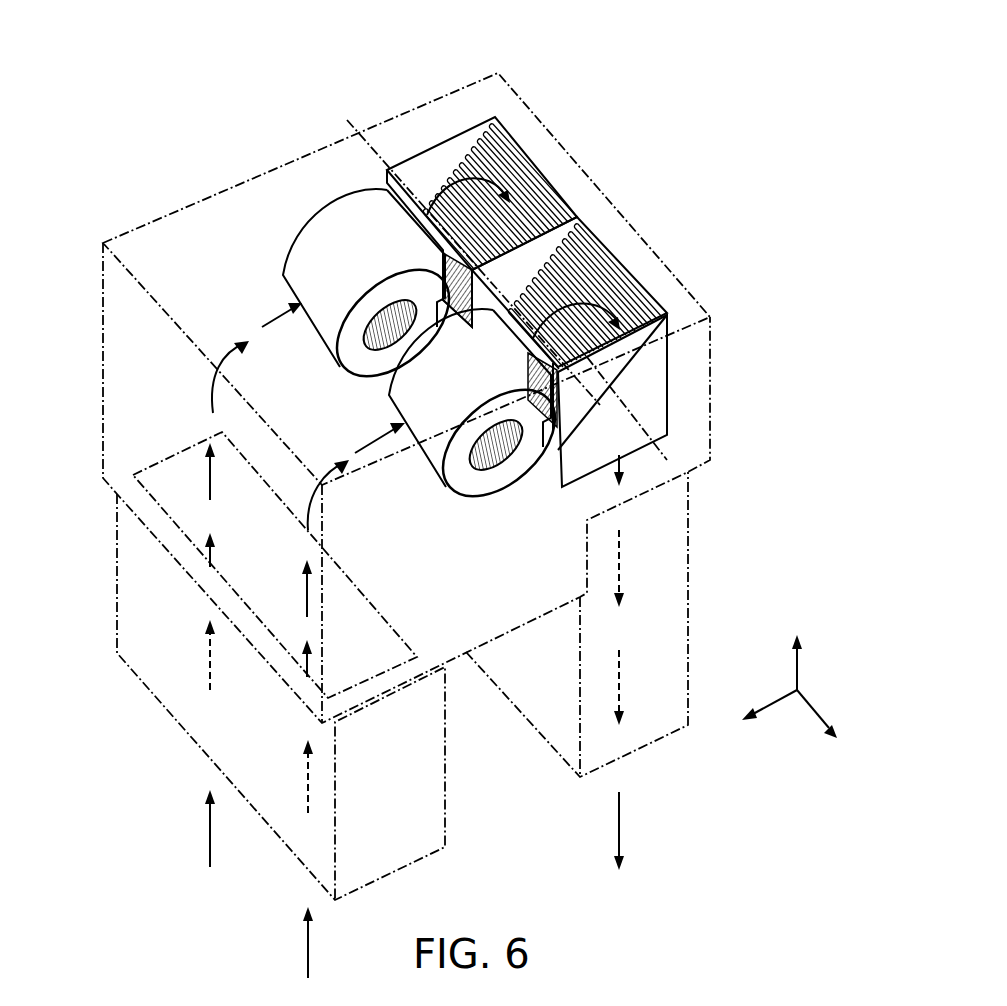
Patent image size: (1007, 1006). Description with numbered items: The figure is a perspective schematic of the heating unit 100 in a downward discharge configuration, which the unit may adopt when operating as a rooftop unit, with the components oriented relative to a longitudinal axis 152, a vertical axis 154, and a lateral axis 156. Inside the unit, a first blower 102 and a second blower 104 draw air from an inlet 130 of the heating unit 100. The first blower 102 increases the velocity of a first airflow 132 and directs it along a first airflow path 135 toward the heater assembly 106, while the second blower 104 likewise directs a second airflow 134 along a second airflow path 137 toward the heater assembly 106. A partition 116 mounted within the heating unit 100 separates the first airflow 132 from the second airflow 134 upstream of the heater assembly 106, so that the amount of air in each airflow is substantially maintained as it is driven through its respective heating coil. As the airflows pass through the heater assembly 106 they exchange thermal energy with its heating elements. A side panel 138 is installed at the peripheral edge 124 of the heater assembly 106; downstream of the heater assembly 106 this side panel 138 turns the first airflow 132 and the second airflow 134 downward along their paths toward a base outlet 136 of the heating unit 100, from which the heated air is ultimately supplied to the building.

The heating unit 100 is at (660, 246).
The first blower 102 is at (480, 497).
The second blower 104 is at (313, 230).
The heater assembly 106 is at (642, 228).
The partition 116 is at (538, 252).
The peripheral edge 124 is at (370, 117).
The inlet 130 is at (240, 749).
The first airflow 132 is at (307, 778).
The second airflow 134 is at (210, 660).
The first airflow path 135 is at (362, 657).
The base outlet 136 is at (540, 695).
The second airflow path 137 is at (205, 383).
The side panel 138 is at (437, 118).
The longitudinal axis 152 is at (815, 710).
The vertical axis 154 is at (795, 670).
The lateral axis 156 is at (770, 701).